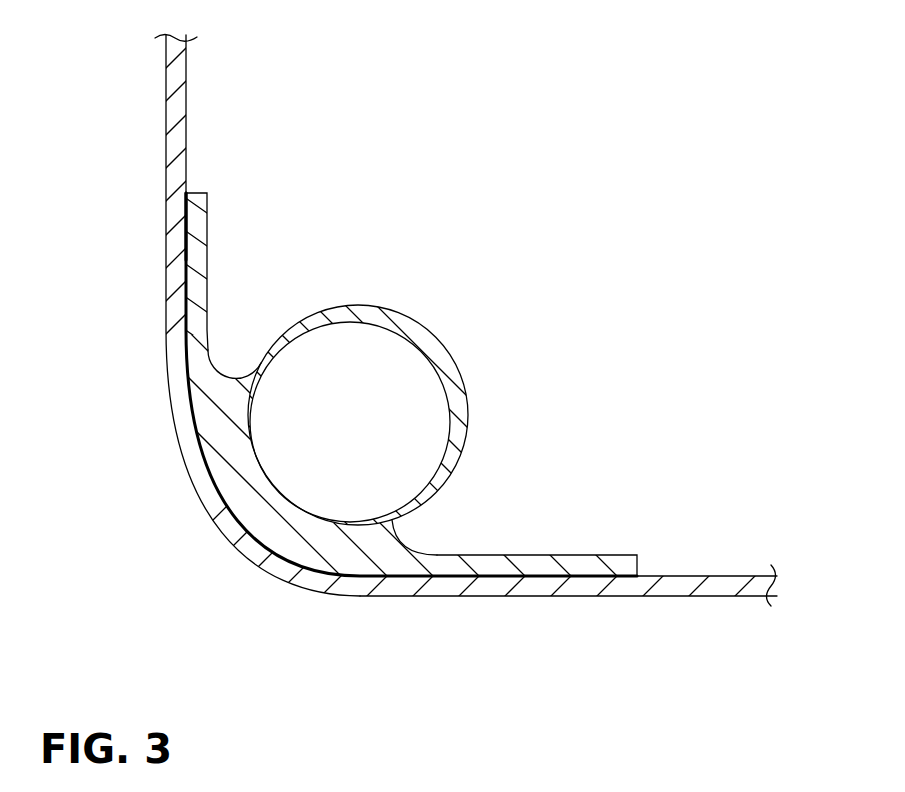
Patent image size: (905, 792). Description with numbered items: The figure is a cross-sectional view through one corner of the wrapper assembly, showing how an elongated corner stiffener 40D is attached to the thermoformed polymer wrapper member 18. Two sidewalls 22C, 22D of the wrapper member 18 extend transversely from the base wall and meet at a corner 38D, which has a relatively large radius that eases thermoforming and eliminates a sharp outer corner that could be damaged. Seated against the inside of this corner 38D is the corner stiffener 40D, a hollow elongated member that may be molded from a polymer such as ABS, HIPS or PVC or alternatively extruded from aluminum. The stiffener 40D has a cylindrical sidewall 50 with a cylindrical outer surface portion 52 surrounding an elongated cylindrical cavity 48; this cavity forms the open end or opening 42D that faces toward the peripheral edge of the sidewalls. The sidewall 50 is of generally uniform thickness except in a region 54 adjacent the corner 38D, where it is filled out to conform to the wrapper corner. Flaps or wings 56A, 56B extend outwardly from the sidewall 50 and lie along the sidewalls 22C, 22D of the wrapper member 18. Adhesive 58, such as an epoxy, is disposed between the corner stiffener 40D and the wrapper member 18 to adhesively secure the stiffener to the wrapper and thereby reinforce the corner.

The polymer wrapper member 18 is at (476, 354).
The sidewall 22C is at (723, 592).
The sidewall 22D is at (172, 112).
The corner 38D is at (203, 500).
The elongated corner stiffener 40D is at (457, 436).
The opening 42D is at (408, 393).
The elongated cylindrical cavity 48 is at (352, 352).
The cylindrical sidewall 50 is at (254, 362).
The cylindrical outer surface portion 52 is at (317, 313).
The region 54 is at (270, 522).
The flap or wing 56A is at (545, 553).
The flap or wing 56B is at (207, 222).
The adhesive 58 is at (185, 207).